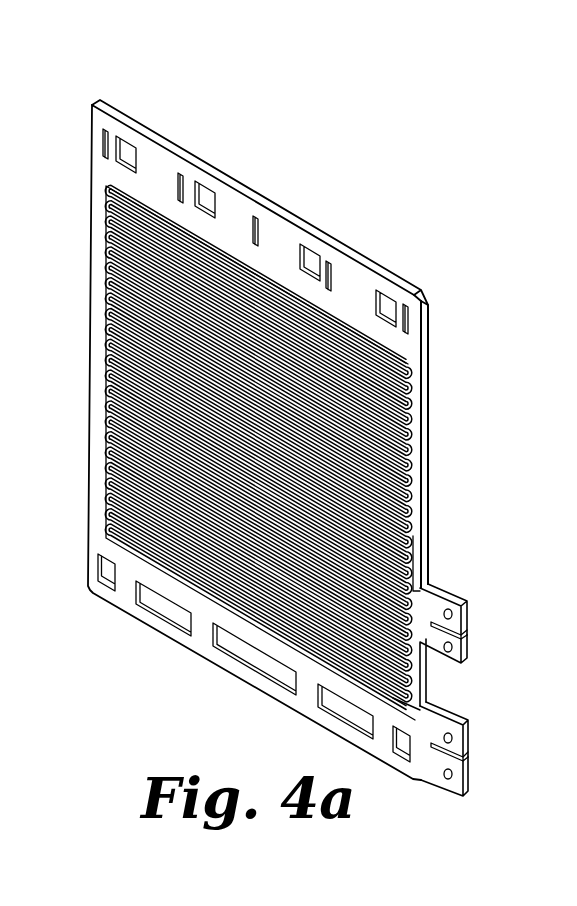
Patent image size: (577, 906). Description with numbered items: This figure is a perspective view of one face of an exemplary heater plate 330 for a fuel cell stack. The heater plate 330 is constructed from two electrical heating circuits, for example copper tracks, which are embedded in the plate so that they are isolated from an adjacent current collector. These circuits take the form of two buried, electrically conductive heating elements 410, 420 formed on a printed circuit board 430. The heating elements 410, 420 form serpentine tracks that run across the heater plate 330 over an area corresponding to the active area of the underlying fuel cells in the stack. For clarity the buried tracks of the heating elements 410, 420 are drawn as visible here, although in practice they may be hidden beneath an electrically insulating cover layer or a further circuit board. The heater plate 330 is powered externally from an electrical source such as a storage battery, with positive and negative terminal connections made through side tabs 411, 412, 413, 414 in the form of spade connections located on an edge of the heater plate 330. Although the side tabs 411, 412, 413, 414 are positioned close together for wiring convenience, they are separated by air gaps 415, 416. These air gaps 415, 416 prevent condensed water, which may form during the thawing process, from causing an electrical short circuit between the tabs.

The heater plate 330 is at (315, 147).
The printed circuit board 430 is at (413, 383).
The heating element 410 is at (405, 528).
The side tab 411 is at (455, 593).
The side tab 412 is at (458, 650).
The air gap 415 is at (458, 632).
The heating element 420 is at (405, 705).
The side tab 413 is at (455, 716).
The side tab 414 is at (458, 776).
The air gap 416 is at (458, 752).